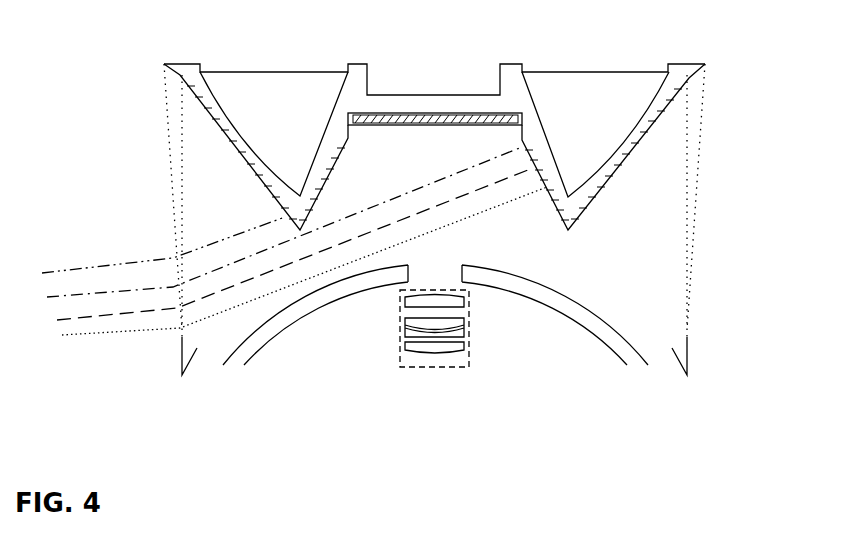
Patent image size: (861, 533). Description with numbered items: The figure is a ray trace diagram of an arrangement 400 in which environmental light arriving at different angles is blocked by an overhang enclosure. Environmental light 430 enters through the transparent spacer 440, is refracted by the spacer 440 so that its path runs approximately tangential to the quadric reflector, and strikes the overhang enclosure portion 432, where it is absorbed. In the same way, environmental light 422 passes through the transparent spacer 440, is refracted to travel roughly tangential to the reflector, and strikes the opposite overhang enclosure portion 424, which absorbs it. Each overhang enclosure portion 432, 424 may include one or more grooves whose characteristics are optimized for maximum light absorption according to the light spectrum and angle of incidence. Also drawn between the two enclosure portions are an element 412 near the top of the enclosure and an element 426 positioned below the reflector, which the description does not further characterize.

The optical system 400 is at (831, 40).
The light emitting element 412 is at (425, 127).
The environmental light 422 is at (485, 212).
The overhang enclosure portion 424 is at (547, 190).
The lens assembly 426 is at (469, 330).
The environmental light 430 is at (127, 264).
The overhang enclosure portion 432 is at (258, 181).
The transparent spacer 440 is at (165, 163).